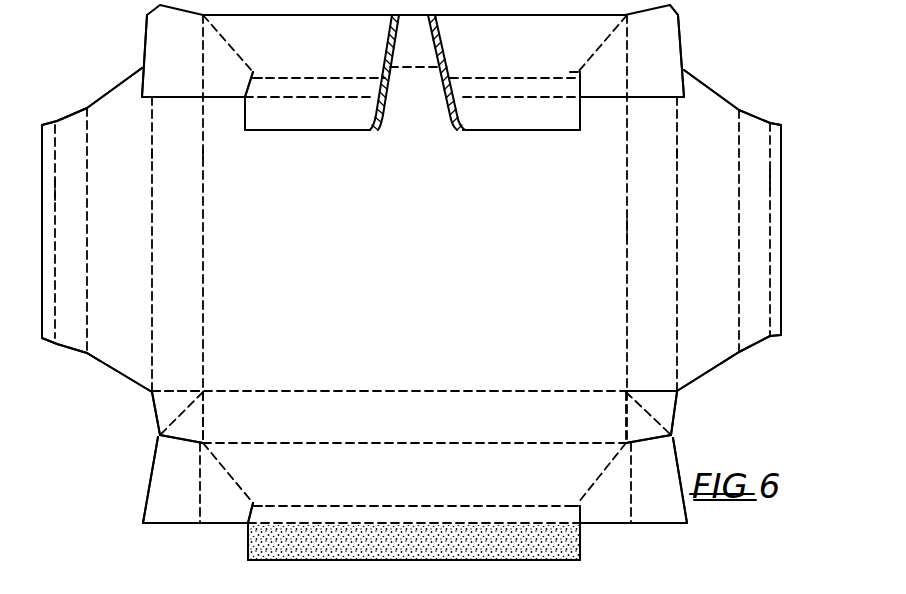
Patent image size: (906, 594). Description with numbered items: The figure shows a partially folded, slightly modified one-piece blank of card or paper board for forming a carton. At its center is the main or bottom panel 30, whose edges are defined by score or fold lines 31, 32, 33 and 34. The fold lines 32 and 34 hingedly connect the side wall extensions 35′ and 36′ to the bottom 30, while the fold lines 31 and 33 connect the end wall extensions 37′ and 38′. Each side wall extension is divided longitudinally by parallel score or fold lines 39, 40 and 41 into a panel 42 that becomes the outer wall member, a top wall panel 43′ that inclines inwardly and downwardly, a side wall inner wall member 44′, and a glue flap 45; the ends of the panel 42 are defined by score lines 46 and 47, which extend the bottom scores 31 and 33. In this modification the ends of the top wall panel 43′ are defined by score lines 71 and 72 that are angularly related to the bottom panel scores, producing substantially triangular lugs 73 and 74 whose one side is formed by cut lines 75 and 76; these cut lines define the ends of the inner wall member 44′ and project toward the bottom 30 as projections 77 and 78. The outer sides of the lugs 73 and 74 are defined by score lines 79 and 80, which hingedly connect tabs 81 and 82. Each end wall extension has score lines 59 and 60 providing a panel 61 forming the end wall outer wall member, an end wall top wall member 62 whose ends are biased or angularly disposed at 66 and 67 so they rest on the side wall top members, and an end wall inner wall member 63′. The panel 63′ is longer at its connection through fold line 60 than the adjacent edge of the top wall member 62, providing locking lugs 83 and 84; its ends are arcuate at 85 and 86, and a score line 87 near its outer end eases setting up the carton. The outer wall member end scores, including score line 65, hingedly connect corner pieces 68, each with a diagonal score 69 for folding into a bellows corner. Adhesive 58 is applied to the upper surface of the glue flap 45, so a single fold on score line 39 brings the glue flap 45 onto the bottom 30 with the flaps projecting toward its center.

The main or bottom panel 30 is at (459, 213).
The score or fold line 31 is at (204, 238).
The score or fold line 32 is at (406, 67).
The score or fold line 33 is at (626, 288).
The score or fold line 34 is at (444, 392).
The side wall extension 35′ is at (704, 530).
The side wall extension 36′ is at (722, 32).
The end wall extension 37′ is at (733, 399).
The end wall extension 38′ is at (88, 404).
The score or fold line 39 is at (511, 16).
The score or fold line 40 is at (519, 78).
The score or fold line 41 is at (503, 96).
The panel 42 is at (432, 52).
The top wall panel 43′ is at (372, 50).
The side wall inner wall member 44′ is at (315, 97).
The glue flap 45 is at (312, 130).
The score or fold line 46 is at (204, 417).
The score or fold line 47 is at (626, 424).
The adhesive 58 is at (282, 561).
The score or fold line 59 is at (153, 195).
The score or fold line 60 is at (88, 205).
The panel 61 is at (627, 232).
The end wall top wall member 62 is at (204, 177).
The end wall inner wall member 63′ is at (87, 290).
The score or fold line 65 is at (190, 390).
The biased end 66 is at (113, 89).
The biased end 67 is at (153, 398).
The corner piece 68 is at (158, 440).
The diagonal score 69 is at (180, 414).
The score or fold line 71 is at (243, 58).
The score or fold line 72 is at (598, 46).
The triangular lug 73 is at (226, 90).
The triangular lug 74 is at (611, 94).
The cut line 75 is at (246, 85).
The cut line 76 is at (597, 97).
The projection 77 is at (256, 74).
The projection 78 is at (578, 72).
The score or fold line 79 is at (197, 59).
The score or fold line 80 is at (629, 60).
The tab 81 is at (147, 57).
The tab 82 is at (685, 55).
The locking lug 83 is at (87, 108).
The locking lug 84 is at (127, 378).
The arcuate end 85 is at (70, 114).
The arcuate end 86 is at (63, 347).
The score or fold line 87 is at (56, 192).